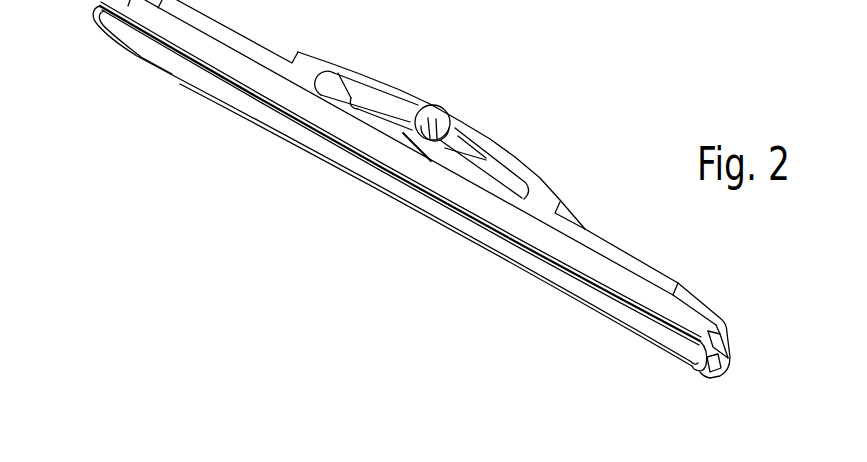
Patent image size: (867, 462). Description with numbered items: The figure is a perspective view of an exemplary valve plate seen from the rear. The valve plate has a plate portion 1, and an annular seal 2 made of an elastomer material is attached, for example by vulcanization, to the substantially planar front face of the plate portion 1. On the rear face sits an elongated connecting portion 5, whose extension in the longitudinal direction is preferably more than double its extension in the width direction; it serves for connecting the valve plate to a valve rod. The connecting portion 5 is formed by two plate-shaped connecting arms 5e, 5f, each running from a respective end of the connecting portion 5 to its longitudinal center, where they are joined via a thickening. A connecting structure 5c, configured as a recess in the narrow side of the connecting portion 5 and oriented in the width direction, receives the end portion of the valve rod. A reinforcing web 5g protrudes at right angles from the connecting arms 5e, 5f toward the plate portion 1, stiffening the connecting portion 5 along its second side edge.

The plate portion 1 is at (641, 252).
The annular seal 2 is at (697, 372).
The connecting portion 5 is at (498, 135).
The connecting structure 5c is at (433, 122).
The connecting arm 5e is at (514, 172).
The connecting arm 5f is at (373, 82).
The reinforcing web 5g is at (398, 117).